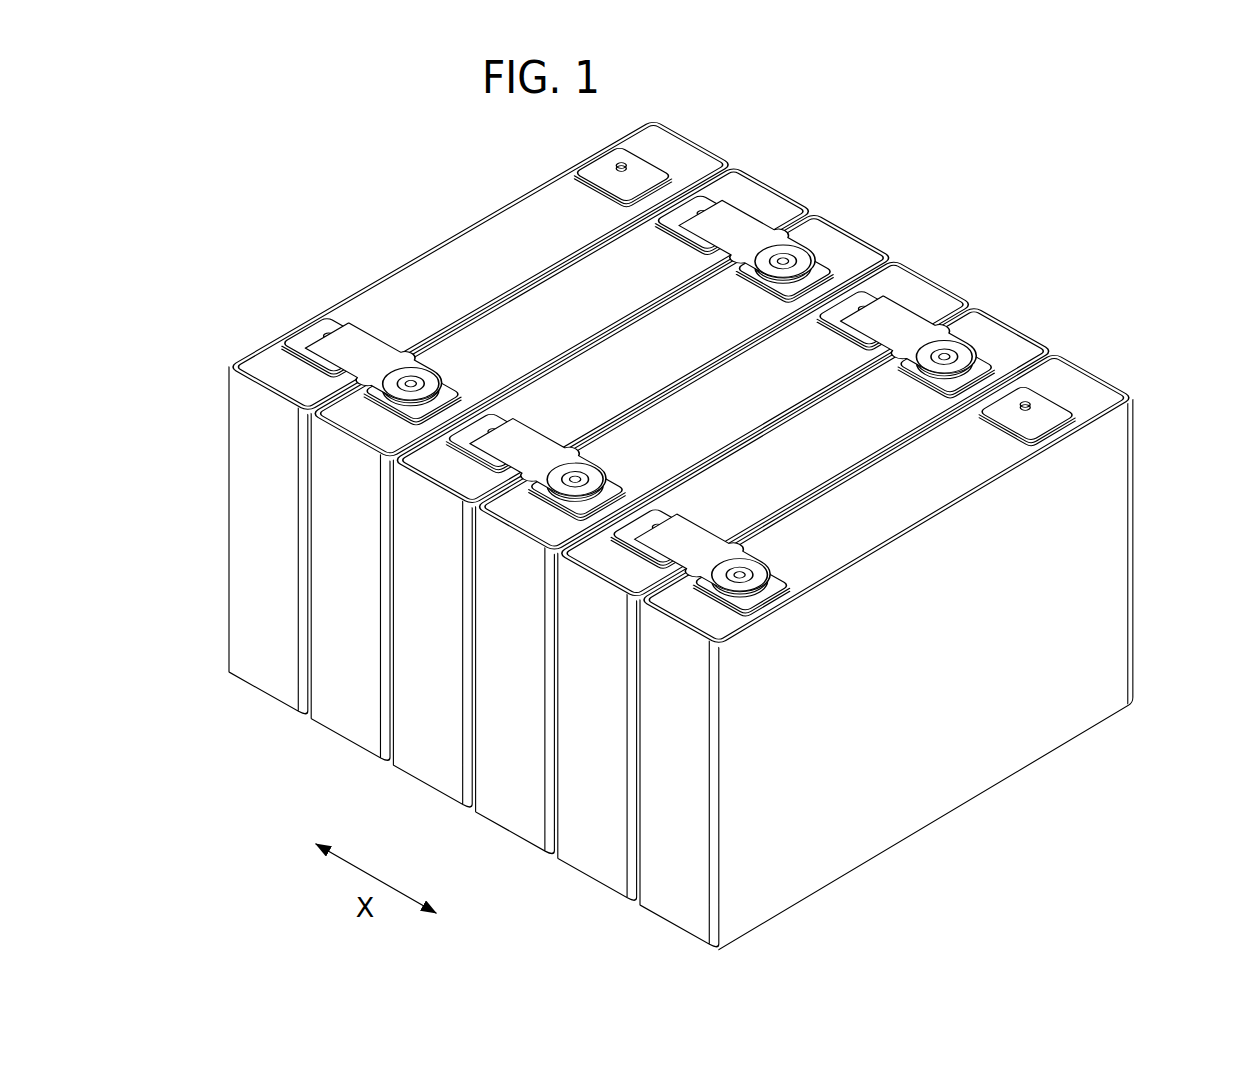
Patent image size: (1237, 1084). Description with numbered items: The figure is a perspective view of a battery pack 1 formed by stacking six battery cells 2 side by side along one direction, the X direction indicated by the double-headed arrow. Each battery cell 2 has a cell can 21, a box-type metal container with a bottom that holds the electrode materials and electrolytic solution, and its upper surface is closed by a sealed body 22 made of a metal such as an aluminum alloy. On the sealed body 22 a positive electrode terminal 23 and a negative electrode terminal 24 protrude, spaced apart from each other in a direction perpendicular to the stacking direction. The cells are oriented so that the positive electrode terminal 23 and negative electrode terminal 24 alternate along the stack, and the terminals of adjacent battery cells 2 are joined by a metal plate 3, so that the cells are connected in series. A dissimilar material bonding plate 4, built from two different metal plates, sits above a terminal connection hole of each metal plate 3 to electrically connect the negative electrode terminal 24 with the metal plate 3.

The battery pack 1 is at (1056, 130).
The battery cell 2 is at (714, 100).
The metal plate 3 is at (405, 322).
The dissimilar material bonding plate 4 is at (432, 364).
The cell can 21 is at (270, 684).
The sealed body 22 is at (1120, 398).
The positive electrode terminal 23 is at (333, 335).
The negative electrode terminal 24 is at (622, 165).